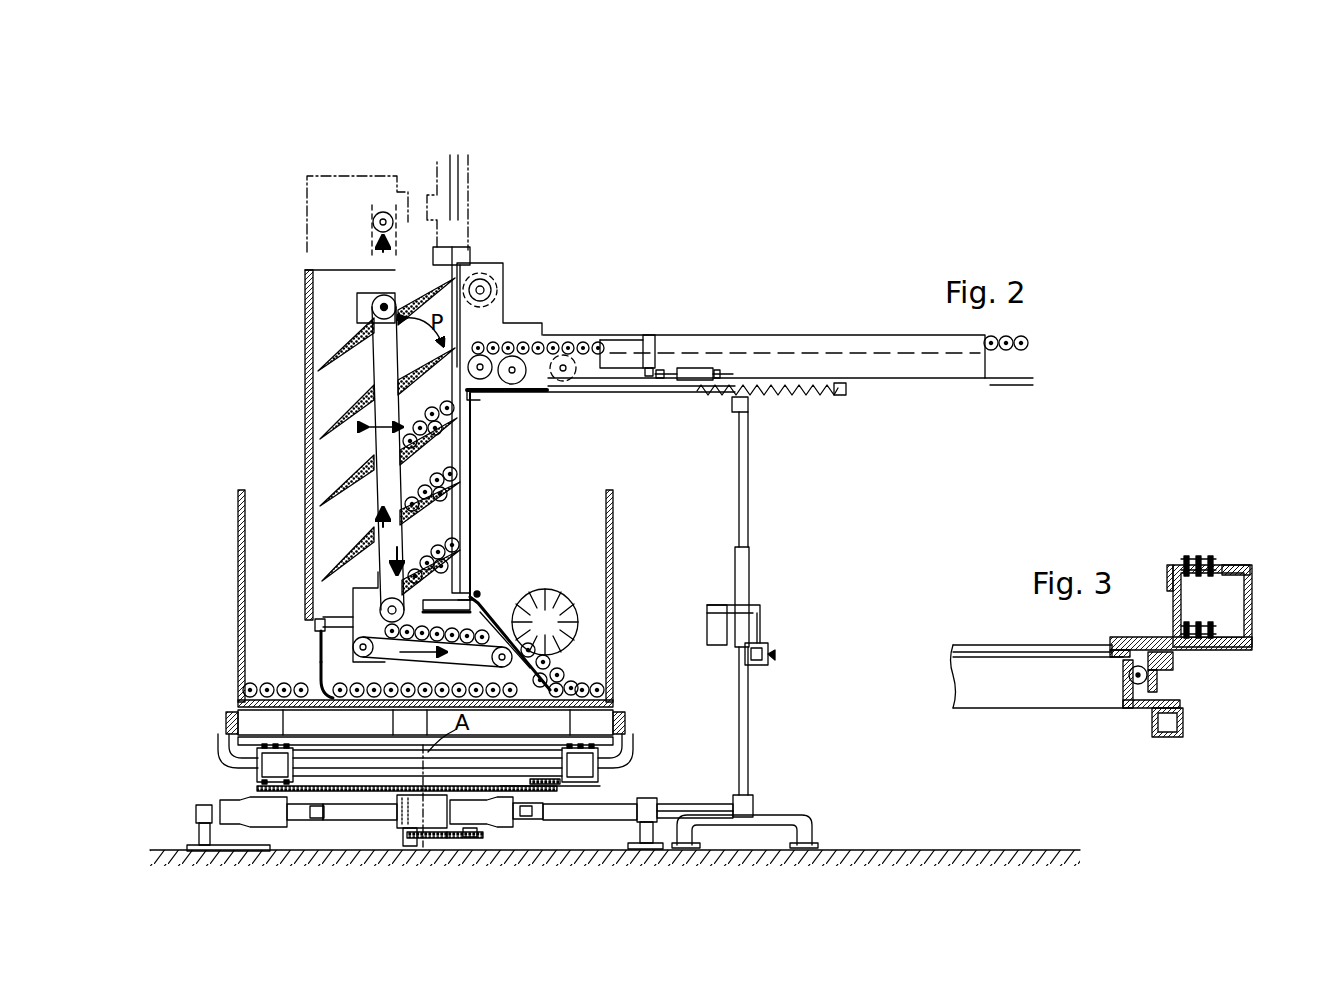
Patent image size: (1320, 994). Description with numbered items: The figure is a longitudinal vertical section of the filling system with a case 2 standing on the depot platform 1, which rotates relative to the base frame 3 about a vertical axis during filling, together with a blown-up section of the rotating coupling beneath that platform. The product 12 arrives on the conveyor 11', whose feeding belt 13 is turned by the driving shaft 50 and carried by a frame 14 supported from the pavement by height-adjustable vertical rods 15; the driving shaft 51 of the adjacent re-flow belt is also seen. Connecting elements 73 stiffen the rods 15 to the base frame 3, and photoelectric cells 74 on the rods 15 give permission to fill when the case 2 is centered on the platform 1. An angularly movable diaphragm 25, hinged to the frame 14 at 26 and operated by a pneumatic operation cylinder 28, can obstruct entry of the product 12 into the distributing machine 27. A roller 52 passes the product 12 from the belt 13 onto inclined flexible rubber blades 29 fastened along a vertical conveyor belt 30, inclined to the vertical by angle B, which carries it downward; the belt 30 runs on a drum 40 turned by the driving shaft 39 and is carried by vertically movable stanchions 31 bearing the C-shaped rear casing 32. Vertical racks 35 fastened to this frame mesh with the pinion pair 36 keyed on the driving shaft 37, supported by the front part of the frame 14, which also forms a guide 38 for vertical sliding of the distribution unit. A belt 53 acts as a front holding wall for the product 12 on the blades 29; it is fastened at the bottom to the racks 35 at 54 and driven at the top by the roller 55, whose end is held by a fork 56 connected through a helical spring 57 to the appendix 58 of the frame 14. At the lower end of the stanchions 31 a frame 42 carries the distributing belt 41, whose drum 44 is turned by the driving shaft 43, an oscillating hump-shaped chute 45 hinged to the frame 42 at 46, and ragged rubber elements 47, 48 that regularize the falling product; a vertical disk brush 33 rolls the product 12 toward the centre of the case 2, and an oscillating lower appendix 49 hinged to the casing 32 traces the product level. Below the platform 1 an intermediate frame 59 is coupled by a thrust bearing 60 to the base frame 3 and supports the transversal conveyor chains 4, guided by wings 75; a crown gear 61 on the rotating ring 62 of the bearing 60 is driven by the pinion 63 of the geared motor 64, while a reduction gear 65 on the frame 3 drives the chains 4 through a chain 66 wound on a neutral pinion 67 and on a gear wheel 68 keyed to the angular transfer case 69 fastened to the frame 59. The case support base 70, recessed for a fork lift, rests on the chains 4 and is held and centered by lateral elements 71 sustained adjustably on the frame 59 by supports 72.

In FIG. 2, the depot platform 1 is at (205, 750).
In FIG. 2, the case 2 is at (240, 505).
In FIG. 2, the base frame 3 is at (197, 814).
In FIG. 3, the base frame 3 is at (1163, 740).
In FIG. 2, the transversal conveyor chains 4 is at (262, 772).
In FIG. 3, the transversal conveyor chains 4 is at (1197, 557).
In FIG. 2, the product conveyor 11' is at (757, 297).
In FIG. 2, the product 12 is at (455, 462).
In FIG. 2, the feeding belt 13 is at (1030, 386).
In FIG. 2, the frame 14 is at (798, 335).
In FIG. 2, the vertical rods 15 is at (748, 582).
In FIG. 2, the angularly movable diaphragm 25 is at (625, 335).
In FIG. 2, the hinge 26 is at (650, 335).
In FIG. 2, the distributing machine 27 is at (300, 455).
In FIG. 2, the pneumatic operation cylinder 28 is at (695, 370).
In FIG. 2, the inclined flexible rubber blades 29 is at (335, 352).
In FIG. 2, the vertical conveyor belt 30 is at (367, 370).
In FIG. 2, the vertically movable stanchions 31 is at (396, 300).
In FIG. 2, the rear casing 32 is at (308, 420).
In FIG. 2, the vertical disk brush 33 is at (550, 602).
In FIG. 2, the vertical racks 35 is at (462, 250).
In FIG. 2, the pinion pair 36 is at (494, 280).
In FIG. 2, the driving shaft 37 is at (492, 290).
In FIG. 2, the guide 38 is at (465, 318).
In FIG. 2, the driving shaft 39 is at (373, 300).
In FIG. 2, the drum 40 is at (372, 307).
In FIG. 2, the distributing belt 41 is at (362, 657).
In FIG. 2, the frame 42 is at (383, 595).
In FIG. 2, the driving shaft 43 is at (323, 621).
In FIG. 2, the drum 44 is at (320, 662).
In FIG. 2, the chute 45 is at (612, 700).
In FIG. 2, the hinge 46 is at (513, 681).
In FIG. 2, the ragged rubber element 47 is at (500, 620).
In FIG. 2, the ragged rubber element 48 is at (560, 672).
In FIG. 2, the oscillating lower appendix 49 is at (317, 643).
In FIG. 2, the driving shaft 50 is at (530, 376).
In FIG. 2, the driving shaft 51 is at (575, 373).
In FIG. 2, the roller 52 is at (518, 394).
In FIG. 2, the belt 53 is at (473, 500).
In FIG. 2, the fastening point 54 is at (478, 593).
In FIG. 2, the roller 55 is at (485, 394).
In FIG. 2, the fork 56 is at (660, 392).
In FIG. 2, the helical spring 57 is at (800, 396).
In FIG. 2, the appendix 58 is at (843, 396).
In FIG. 2, the intermediate frame 59 is at (598, 767).
In FIG. 3, the intermediate frame 59 is at (1252, 612).
In FIG. 3, the thrust bearing 60 is at (1135, 676).
In FIG. 2, the crown gear 61 is at (560, 783).
In FIG. 3, the crown gear 61 is at (1175, 663).
In FIG. 3, the rotating ring 62 is at (1160, 696).
In FIG. 2, the pinion 63 is at (258, 790).
In FIG. 2, the geared motor 64 is at (247, 825).
In FIG. 2, the reduction gear 65 is at (505, 830).
In FIG. 2, the chain 66 is at (445, 838).
In FIG. 2, the neutral pinion 67 is at (475, 840).
In FIG. 2, the gear wheel 68 is at (393, 830).
In FIG. 2, the angular transfer case 69 is at (398, 825).
In FIG. 2, the case support base 70 is at (260, 722).
In FIG. 2, the lateral elements 71 is at (230, 718).
In FIG. 2, the supports 72 is at (640, 752).
In FIG. 2, the connecting elements 73 is at (745, 797).
In FIG. 2, the photoelectric cells 74 is at (710, 627).
In FIG. 3, the wings 75 is at (1170, 572).